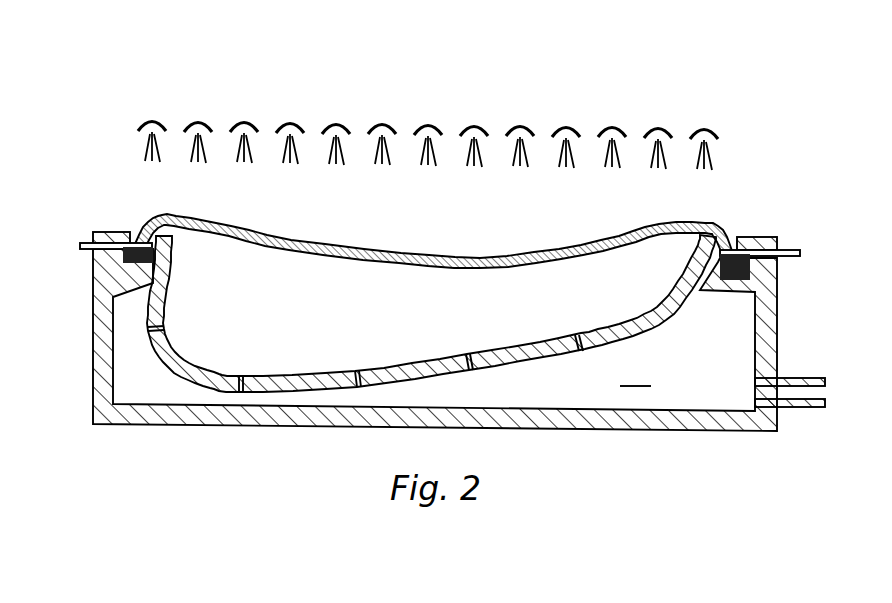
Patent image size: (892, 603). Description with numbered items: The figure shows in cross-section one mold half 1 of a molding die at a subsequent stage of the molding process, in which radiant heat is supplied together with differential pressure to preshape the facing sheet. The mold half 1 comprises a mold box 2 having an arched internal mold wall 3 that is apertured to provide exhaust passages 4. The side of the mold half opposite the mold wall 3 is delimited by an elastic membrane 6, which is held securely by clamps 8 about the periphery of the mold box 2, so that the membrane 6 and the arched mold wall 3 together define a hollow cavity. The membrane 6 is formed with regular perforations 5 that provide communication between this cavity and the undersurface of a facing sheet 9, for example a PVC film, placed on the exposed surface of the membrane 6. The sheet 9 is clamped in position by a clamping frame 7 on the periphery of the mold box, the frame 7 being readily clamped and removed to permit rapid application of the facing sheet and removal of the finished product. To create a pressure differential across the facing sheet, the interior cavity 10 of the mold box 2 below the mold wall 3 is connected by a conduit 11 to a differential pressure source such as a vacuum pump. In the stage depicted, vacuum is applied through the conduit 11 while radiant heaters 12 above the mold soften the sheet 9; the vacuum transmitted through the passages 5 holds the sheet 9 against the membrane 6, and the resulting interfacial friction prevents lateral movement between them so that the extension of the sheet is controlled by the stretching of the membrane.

The mold half 1 is at (566, 444).
The mold box 2 is at (300, 431).
The mold wall 3 is at (291, 376).
The exhaust passages 4 is at (238, 376).
The perforations 5 is at (300, 258).
The elastic membrane 6 is at (500, 270).
The clamping frame 7 is at (118, 232).
The clamps 8 is at (185, 242).
The facing sheet 9 is at (484, 258).
The cavity 10 is at (635, 373).
The conduit 11 is at (793, 378).
The radiant heaters 12 is at (506, 113).